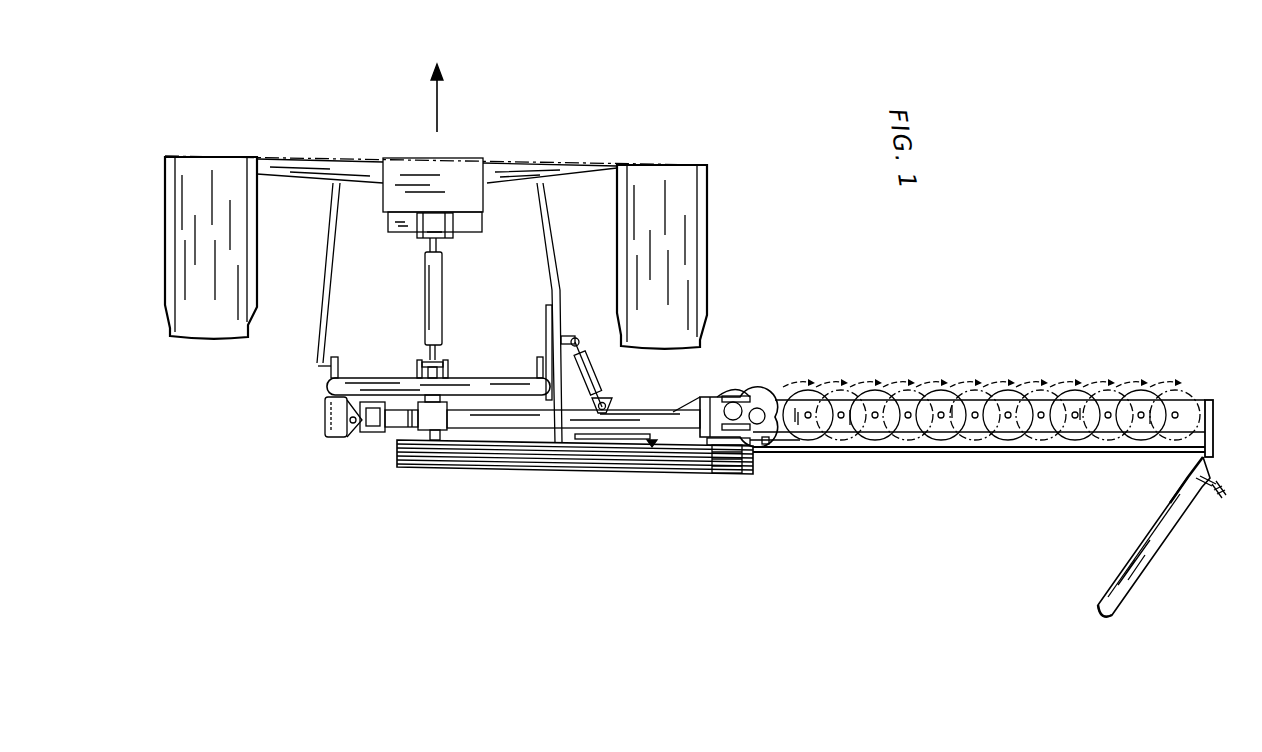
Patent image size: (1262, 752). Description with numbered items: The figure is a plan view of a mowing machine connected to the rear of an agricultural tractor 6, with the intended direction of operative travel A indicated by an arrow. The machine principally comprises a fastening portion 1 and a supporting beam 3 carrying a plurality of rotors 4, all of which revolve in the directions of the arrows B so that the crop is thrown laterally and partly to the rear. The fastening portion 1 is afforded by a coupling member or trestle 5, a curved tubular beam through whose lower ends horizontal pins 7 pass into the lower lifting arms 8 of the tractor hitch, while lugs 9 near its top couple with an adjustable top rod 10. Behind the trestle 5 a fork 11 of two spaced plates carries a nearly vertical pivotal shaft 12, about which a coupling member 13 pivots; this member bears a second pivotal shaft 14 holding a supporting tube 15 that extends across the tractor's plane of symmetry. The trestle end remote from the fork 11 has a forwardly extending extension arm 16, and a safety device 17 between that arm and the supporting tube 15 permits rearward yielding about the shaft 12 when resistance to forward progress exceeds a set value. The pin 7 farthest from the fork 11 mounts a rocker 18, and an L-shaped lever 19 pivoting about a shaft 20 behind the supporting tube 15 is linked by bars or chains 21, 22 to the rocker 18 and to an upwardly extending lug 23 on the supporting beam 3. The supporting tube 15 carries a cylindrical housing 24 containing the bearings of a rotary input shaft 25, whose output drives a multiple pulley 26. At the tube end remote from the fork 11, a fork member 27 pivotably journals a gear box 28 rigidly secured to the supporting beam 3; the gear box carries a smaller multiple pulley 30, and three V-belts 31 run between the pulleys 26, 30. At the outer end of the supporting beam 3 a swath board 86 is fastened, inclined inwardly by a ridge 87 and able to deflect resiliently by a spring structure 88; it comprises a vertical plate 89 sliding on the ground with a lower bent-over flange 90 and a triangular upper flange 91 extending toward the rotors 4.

The fastening portion 1 is at (502, 368).
The supporting beam 3 is at (978, 463).
The rotors 4 is at (850, 458).
The coupling member or trestle 5 is at (325, 385).
The tractor 6 is at (512, 158).
The horizontal pins 7 is at (337, 363).
The lower lifting arms 8 is at (335, 235).
The lugs 9 is at (446, 364).
The adjustable top rod 10 is at (453, 307).
The fork 11 is at (325, 418).
The pivotal shaft 12 is at (351, 432).
The coupling member 13 is at (357, 438).
The pivotal shaft 14 is at (377, 434).
The supporting tube 15 is at (665, 420).
The extension arm 16 is at (597, 345).
The safety device 17 is at (604, 390).
The rocker 18 is at (567, 303).
The lever 19 is at (623, 445).
The shaft 20 is at (651, 447).
The bar, chain or the like 21 is at (567, 440).
The bar, chain or the like 22 is at (690, 445).
The lug 23 is at (772, 444).
The cylindrical housing 24 is at (430, 431).
The rotary input shaft 25 is at (416, 397).
The multiple pulley 26 is at (447, 468).
The fork member 27 is at (747, 392).
The gear box 28 is at (758, 388).
The smaller multiple pulley 30 is at (728, 474).
The V-belts 31 is at (703, 463).
The swath board 86 is at (1131, 581).
The ridge 87 is at (1220, 420).
The spring structure 88 is at (1205, 493).
The vertical plate 89 is at (1168, 538).
The flange 90 is at (1163, 510).
The flange 91 is at (1102, 607).
The direction of operative travel A is at (443, 98).
The direction of rotor rotation B is at (942, 384).